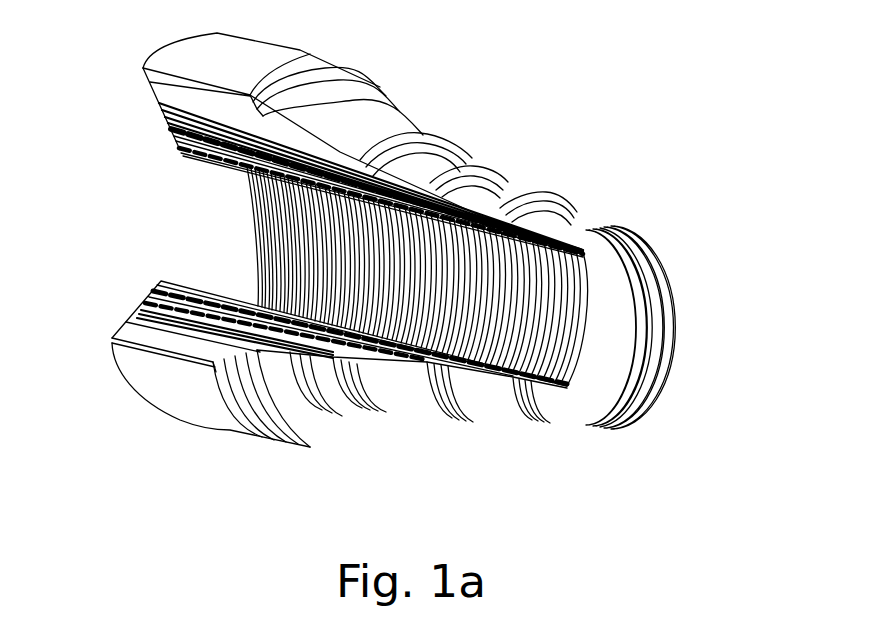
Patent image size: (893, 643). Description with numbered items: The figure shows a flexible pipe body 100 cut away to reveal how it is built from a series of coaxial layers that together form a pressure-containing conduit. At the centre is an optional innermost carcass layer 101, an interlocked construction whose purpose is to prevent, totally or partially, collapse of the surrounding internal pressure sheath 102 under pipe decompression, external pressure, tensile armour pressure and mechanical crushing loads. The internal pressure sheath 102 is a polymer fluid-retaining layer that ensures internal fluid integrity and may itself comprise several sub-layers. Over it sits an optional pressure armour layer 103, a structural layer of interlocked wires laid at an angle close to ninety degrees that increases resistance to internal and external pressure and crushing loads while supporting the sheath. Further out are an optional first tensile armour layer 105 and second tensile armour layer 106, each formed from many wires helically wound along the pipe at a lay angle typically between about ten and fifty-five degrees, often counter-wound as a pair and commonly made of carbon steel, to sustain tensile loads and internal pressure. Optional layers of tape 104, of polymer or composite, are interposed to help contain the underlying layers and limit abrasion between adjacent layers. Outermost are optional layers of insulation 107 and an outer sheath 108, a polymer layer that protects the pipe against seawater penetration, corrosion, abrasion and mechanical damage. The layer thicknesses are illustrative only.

The pipe body 100 is at (133, 420).
The carcass layer 101 is at (678, 337).
The internal pressure sheath 102 is at (545, 425).
The pressure armour layer 103 is at (540, 188).
The layers of tape 104 is at (470, 157).
The first tensile armour layer 105 is at (427, 135).
The second tensile armour layer 106 is at (358, 405).
The layers of insulation 107 is at (386, 98).
The outer sheath 108 is at (220, 424).